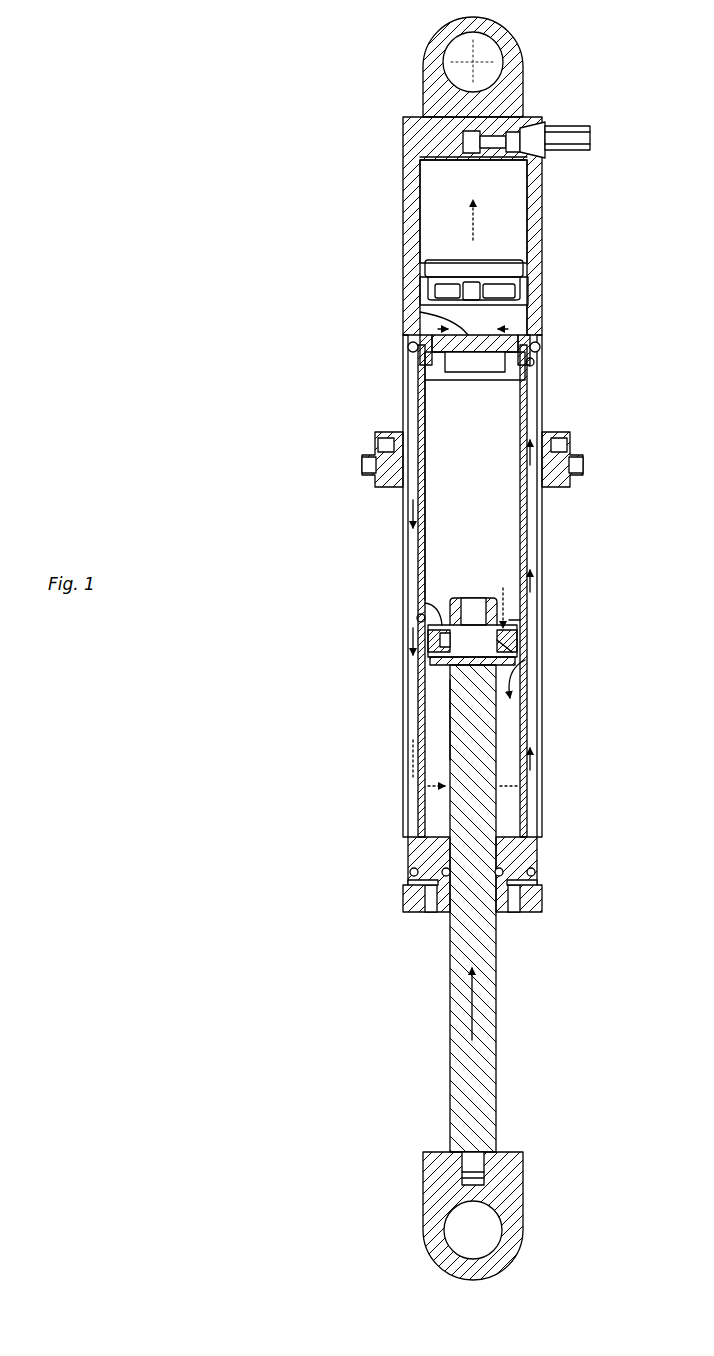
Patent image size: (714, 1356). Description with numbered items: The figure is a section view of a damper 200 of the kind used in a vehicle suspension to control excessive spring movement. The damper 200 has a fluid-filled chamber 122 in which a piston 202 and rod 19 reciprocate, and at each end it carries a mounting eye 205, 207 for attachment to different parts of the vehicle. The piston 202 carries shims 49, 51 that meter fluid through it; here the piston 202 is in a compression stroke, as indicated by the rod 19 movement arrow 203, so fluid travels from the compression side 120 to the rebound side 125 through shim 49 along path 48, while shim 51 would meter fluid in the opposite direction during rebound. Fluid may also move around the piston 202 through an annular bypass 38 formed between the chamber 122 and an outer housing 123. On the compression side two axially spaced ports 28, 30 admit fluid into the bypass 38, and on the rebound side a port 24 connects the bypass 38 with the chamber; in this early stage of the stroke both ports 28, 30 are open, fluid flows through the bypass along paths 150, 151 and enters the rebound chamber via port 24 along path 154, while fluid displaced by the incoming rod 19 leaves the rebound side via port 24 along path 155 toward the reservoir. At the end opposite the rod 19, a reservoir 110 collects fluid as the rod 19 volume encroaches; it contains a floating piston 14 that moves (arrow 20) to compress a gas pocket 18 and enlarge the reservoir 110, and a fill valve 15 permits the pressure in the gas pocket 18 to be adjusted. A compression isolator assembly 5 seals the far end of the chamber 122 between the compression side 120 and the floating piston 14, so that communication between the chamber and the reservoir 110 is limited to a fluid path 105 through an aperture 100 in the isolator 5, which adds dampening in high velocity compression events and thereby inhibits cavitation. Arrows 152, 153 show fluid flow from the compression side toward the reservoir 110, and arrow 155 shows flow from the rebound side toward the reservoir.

The damper 200 is at (126, 212).
The mounting eye 205 is at (452, 62).
The fill valve 15 is at (563, 126).
The gas pocket 18 is at (430, 214).
The arrow 20 is at (476, 216).
The floating piston 14 is at (422, 292).
The compression isolator assembly 5 is at (435, 314).
The reservoir 110 is at (507, 320).
The fluid path 105 is at (407, 345).
The aperture 100 is at (422, 366).
The compression side 120 is at (447, 423).
The chamber 122 is at (527, 394).
The outer housing 123 is at (542, 418).
The port 30 is at (445, 508).
The directional arrow 152 is at (505, 503).
The path 150 is at (408, 529).
The piston 202 is at (474, 606).
The flow path 48 is at (503, 602).
The shim 51 is at (438, 618).
The directional arrow 153 is at (510, 621).
The port 28 is at (418, 619).
The path 151 is at (414, 642).
The shim 49 is at (506, 650).
The rebound side 125 is at (442, 720).
The path 154 is at (413, 755).
The path 155 is at (530, 760).
The port 24 is at (428, 790).
The annular bypass 38 is at (418, 826).
The directional arrow 203 is at (478, 1012).
The rod 19 is at (497, 1098).
The mounting eye 207 is at (446, 1233).